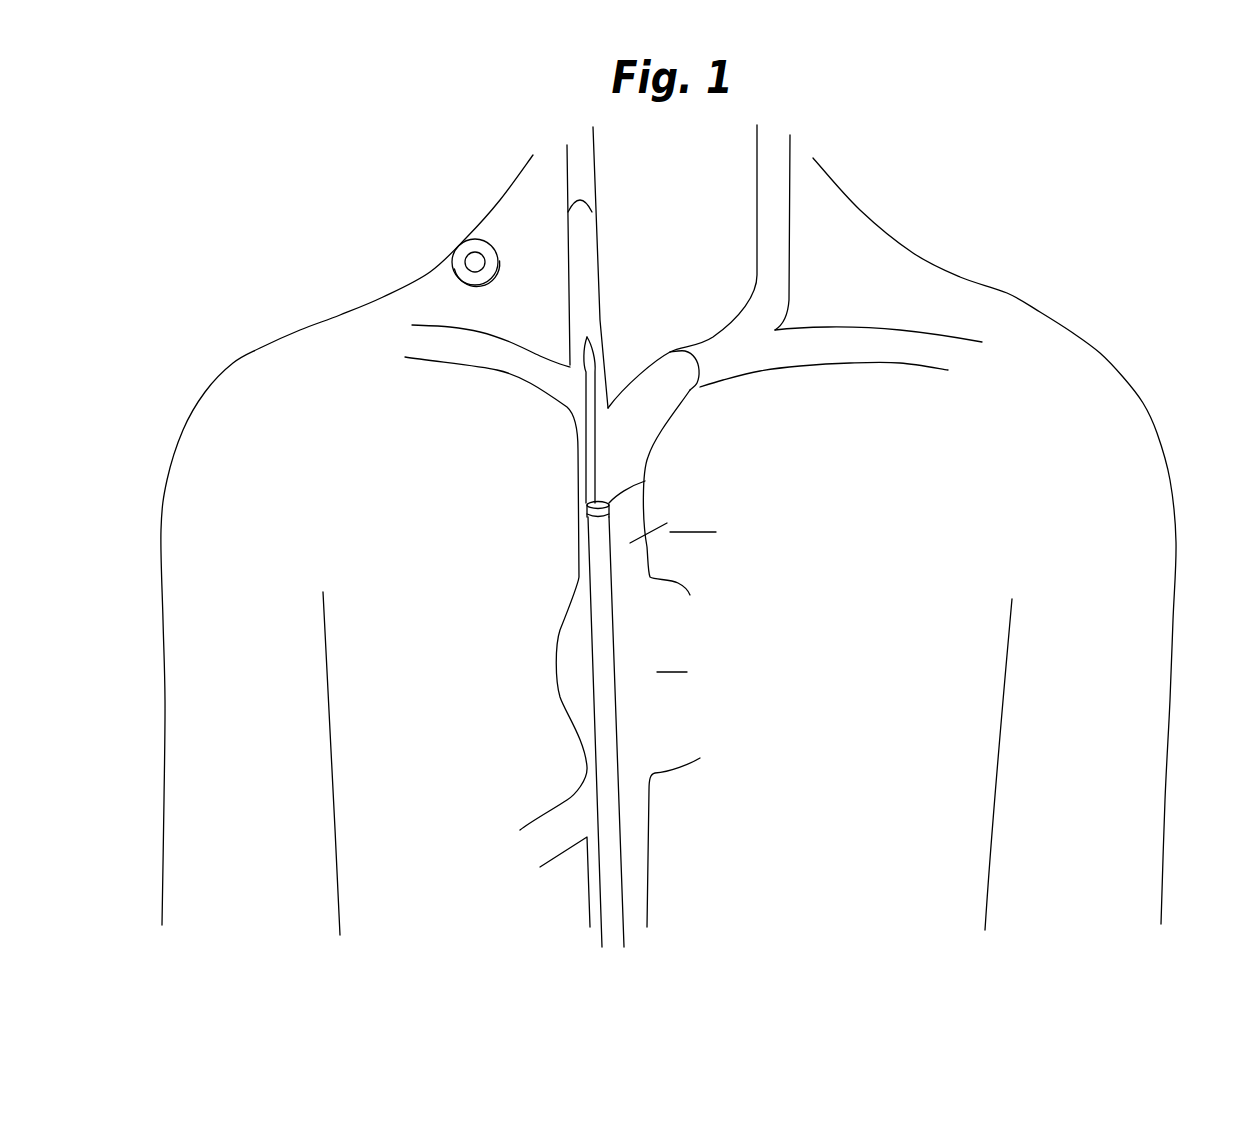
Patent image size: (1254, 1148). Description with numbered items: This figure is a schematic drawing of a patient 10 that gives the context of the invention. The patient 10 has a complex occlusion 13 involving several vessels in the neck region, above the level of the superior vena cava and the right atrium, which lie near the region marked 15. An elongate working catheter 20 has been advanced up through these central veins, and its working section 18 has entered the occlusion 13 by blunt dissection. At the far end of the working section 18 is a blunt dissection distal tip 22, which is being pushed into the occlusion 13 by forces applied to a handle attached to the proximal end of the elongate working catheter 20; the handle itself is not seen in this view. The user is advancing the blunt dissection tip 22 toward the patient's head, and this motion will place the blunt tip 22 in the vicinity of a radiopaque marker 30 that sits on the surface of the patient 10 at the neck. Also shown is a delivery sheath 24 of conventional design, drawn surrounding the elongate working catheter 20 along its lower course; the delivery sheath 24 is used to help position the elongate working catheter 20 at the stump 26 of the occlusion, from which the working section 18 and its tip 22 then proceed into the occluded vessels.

The patient 10 is at (926, 240).
The complex occlusion 13 is at (655, 367).
The superior vena cava and right atrium region 15 is at (543, 584).
The working section 18 is at (580, 396).
The elongate working catheter 20 is at (592, 453).
The blunt dissection distal tip 22 is at (585, 333).
The delivery sheath 24 is at (602, 630).
The stump 26 is at (622, 487).
The radiopaque marker 30 is at (472, 238).